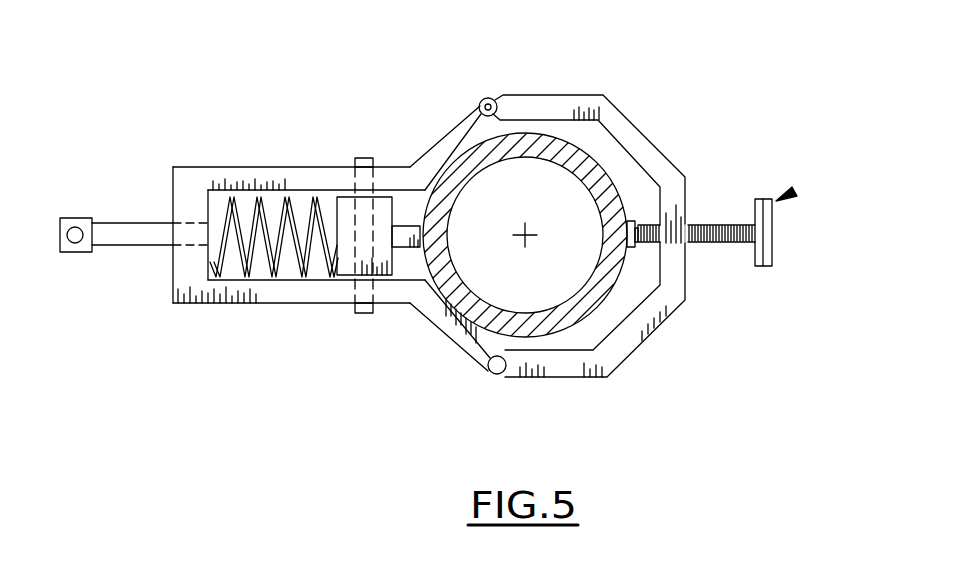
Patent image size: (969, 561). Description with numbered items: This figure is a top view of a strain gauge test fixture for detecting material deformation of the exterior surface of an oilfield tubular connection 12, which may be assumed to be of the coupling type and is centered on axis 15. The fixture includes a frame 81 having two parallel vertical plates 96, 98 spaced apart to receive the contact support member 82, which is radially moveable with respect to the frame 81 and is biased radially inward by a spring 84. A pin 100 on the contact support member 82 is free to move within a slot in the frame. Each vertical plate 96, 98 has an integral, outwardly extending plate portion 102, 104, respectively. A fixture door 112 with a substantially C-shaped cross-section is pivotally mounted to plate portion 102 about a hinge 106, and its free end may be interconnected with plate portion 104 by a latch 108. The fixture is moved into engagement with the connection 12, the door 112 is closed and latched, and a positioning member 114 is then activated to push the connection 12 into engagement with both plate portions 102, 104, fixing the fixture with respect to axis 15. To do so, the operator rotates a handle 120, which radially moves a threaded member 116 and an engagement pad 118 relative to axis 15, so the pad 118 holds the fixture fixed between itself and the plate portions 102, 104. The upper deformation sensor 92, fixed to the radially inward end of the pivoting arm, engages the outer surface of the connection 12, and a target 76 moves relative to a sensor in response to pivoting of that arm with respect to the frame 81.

The connection 12 is at (595, 293).
The axis 15 is at (528, 238).
The target 76 is at (77, 243).
The frame 81 is at (186, 192).
The contact support member 82 is at (382, 210).
The spring 84 is at (288, 198).
The upper deformation sensor 92 is at (421, 236).
The vertical plate 96 is at (400, 177).
The vertical plate 98 is at (412, 293).
The pin 100 is at (360, 313).
The plate portion 102 is at (443, 147).
The plate portion 104 is at (458, 348).
The hinge 106 is at (489, 97).
The latch 108 is at (498, 375).
The fixture door 112 is at (637, 147).
The positioning member 114 is at (790, 195).
The threaded member 116 is at (728, 243).
The engagement pad 118 is at (636, 215).
The handle 120 is at (773, 237).